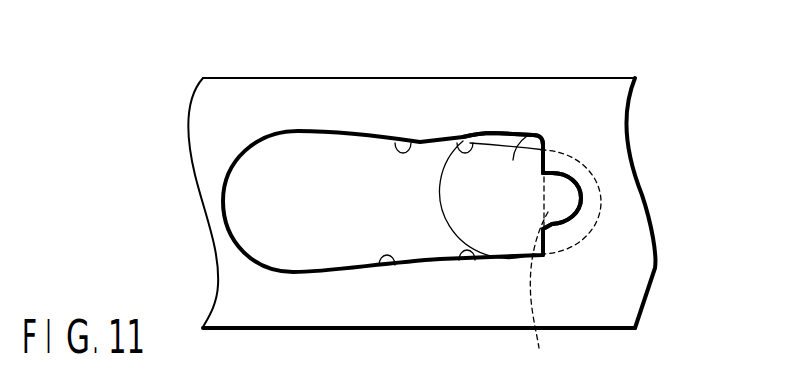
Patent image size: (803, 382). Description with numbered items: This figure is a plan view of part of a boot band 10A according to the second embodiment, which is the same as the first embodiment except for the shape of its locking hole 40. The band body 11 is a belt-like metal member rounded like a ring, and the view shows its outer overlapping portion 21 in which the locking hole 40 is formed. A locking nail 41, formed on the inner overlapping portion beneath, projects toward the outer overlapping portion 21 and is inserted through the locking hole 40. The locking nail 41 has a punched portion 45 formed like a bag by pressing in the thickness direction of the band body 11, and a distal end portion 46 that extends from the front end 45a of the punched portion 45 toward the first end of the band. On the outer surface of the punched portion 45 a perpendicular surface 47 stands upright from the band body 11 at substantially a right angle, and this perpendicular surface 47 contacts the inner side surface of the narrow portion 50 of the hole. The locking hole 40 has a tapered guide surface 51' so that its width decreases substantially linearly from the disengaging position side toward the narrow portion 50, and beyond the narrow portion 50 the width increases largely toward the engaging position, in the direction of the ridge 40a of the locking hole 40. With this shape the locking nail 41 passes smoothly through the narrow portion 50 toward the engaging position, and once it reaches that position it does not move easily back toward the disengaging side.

The boot band 10A is at (669, 79).
The band body 11 is at (617, 138).
The outer overlapping portion 21 is at (311, 313).
The locking hole 40 is at (250, 197).
The ridge 40a is at (530, 296).
The locking nail 41 is at (540, 135).
The punched portion 45 is at (437, 190).
The front end 45a is at (548, 238).
The distal end portion 46 is at (567, 200).
The perpendicular surface 47 is at (476, 137).
The narrow portion 50 is at (471, 142).
The tapered guide surface 51' is at (384, 205).